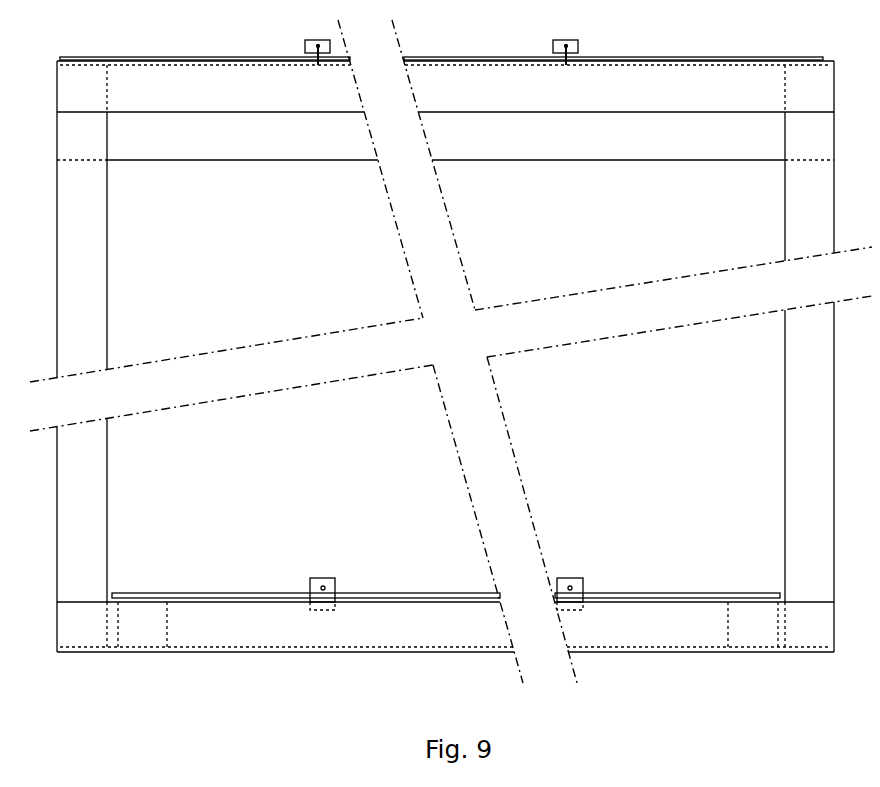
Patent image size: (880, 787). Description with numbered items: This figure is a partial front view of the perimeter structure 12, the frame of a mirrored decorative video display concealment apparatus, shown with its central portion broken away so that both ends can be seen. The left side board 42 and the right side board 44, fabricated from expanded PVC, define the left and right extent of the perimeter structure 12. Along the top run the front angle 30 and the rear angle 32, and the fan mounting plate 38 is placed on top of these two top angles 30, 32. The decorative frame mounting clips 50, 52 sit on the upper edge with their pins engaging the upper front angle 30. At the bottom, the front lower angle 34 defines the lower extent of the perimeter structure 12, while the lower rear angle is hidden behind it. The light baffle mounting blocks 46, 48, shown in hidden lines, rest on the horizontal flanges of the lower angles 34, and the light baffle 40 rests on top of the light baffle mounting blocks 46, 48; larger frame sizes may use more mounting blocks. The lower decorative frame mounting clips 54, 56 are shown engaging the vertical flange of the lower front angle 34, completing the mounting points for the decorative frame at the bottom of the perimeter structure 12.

The perimeter structure 12 is at (649, 713).
The front angle 30 is at (550, 112).
The rear angle 32 is at (625, 158).
The front lower angle 34 is at (307, 652).
The fan mounting plate 38 is at (176, 57).
The light baffle 40 is at (218, 593).
The left side board 42 is at (107, 262).
The right side board 44 is at (785, 437).
The light baffle mounting block 46 is at (167, 628).
The light baffle mounting block 48 is at (728, 628).
The decorative frame mounting clip 50 is at (305, 44).
The decorative frame mounting clip 52 is at (578, 44).
The lower decorative frame mounting clip 54 is at (310, 582).
The lower decorative frame mounting clip 56 is at (583, 580).